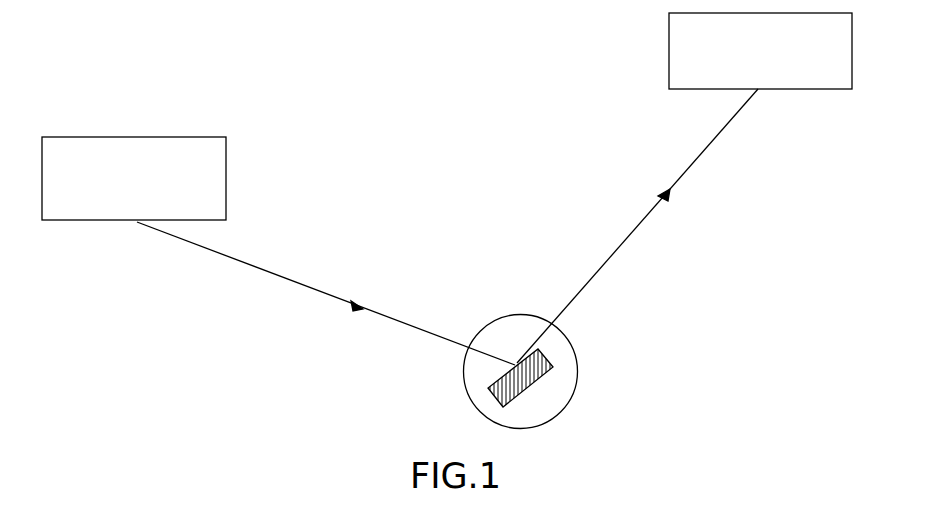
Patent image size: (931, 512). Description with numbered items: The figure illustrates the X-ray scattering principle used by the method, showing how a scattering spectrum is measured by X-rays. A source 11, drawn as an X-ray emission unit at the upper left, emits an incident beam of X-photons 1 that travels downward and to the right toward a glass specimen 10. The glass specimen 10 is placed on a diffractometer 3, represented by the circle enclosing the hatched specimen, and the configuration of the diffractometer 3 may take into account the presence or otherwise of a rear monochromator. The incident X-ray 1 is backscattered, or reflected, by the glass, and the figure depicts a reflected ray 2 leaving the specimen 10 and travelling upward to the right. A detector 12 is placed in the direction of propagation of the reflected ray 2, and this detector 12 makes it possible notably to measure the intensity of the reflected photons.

The incident beam of X-photons 1 is at (290, 278).
The reflected ray 2 is at (685, 172).
The diffractometer 3 is at (568, 343).
The glass specimen 10 is at (535, 385).
The source 11 is at (226, 171).
The detector 12 is at (668, 32).